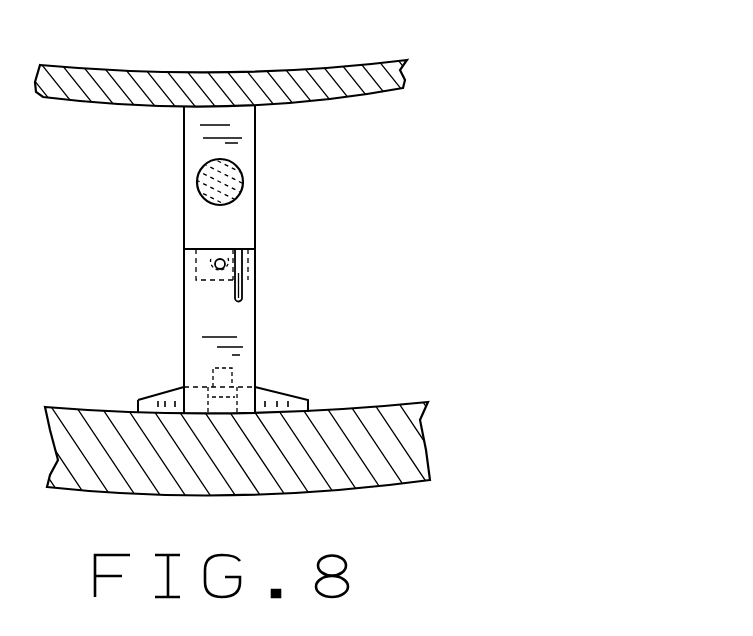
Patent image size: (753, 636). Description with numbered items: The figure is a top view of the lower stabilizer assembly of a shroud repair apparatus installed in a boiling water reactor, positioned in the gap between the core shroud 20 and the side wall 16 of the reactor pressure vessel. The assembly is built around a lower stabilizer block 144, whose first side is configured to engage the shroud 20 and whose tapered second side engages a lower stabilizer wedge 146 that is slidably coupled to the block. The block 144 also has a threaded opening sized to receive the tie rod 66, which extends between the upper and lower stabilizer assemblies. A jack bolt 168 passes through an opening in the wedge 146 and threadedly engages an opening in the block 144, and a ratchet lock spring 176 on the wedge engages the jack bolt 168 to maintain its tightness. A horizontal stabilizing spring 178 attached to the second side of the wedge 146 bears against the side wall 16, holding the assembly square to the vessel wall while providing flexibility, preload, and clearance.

The side wall 16 is at (358, 470).
The core shroud 20 is at (287, 78).
The tie rod 66 is at (240, 175).
The lower stabilizer block 144 is at (239, 215).
The lower stabilizer wedge 146 is at (196, 268).
The jack bolt 168 is at (220, 270).
The ratchet lock spring 176 is at (241, 293).
The horizontal stabilizing spring 178 is at (273, 387).